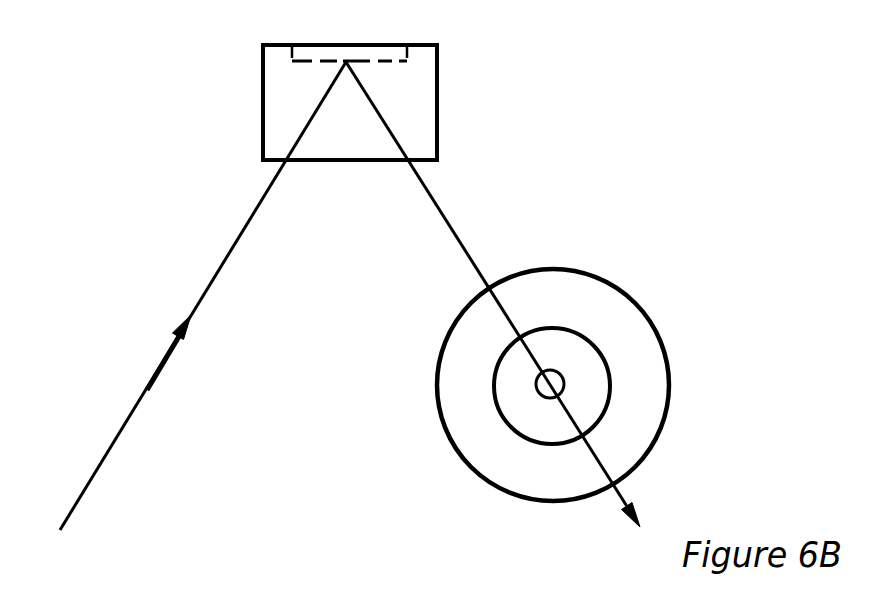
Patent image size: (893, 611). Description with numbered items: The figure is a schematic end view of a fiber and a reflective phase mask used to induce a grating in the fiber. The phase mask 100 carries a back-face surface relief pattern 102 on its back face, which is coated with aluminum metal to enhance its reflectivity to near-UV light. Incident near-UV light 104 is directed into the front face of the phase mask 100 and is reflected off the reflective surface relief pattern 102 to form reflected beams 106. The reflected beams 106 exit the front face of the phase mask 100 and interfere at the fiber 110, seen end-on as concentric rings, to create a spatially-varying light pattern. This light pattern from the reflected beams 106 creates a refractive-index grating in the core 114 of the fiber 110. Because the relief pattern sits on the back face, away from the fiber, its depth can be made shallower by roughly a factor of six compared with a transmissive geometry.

The phase mask 100 is at (263, 81).
The back-face surface relief pattern 102 is at (307, 61).
The incident near-UV light 104 is at (147, 388).
The reflected beams 106 is at (458, 240).
The fiber 110 is at (413, 398).
The core 114 is at (565, 384).